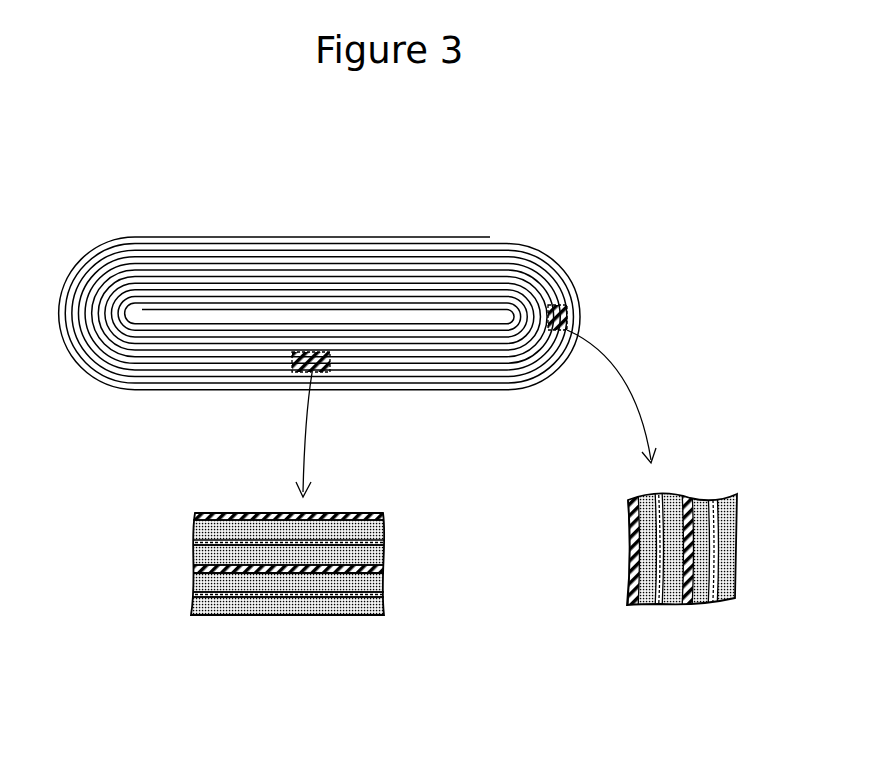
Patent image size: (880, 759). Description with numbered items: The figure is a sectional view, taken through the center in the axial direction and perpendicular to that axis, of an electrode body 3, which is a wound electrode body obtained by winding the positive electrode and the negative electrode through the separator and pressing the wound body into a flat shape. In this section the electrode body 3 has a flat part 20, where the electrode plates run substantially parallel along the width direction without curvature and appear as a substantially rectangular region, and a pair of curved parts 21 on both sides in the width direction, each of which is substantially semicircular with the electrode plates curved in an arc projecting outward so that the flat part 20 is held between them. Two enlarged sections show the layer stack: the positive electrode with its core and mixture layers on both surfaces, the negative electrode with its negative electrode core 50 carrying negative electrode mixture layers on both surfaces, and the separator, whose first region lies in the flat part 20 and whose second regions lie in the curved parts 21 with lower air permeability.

The electrode body 3 is at (640, 186).
The flat part 20 is at (232, 237).
The curved parts 21 is at (97, 247).
The negative electrode core 50 is at (193, 593).